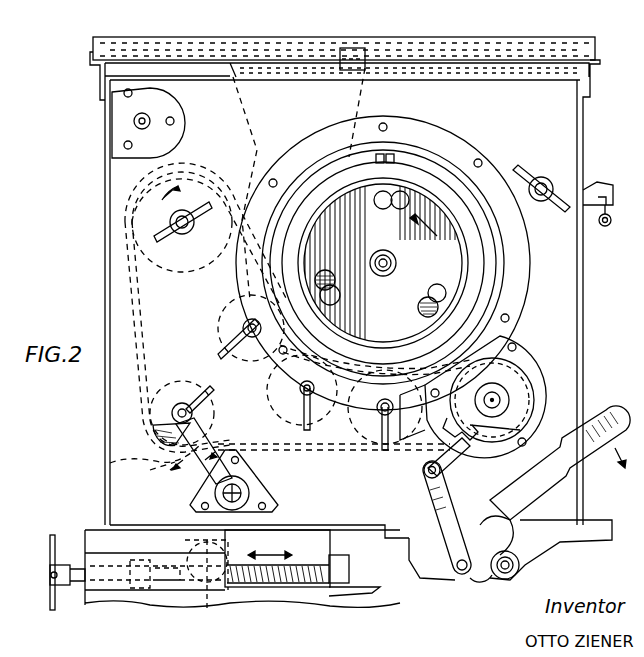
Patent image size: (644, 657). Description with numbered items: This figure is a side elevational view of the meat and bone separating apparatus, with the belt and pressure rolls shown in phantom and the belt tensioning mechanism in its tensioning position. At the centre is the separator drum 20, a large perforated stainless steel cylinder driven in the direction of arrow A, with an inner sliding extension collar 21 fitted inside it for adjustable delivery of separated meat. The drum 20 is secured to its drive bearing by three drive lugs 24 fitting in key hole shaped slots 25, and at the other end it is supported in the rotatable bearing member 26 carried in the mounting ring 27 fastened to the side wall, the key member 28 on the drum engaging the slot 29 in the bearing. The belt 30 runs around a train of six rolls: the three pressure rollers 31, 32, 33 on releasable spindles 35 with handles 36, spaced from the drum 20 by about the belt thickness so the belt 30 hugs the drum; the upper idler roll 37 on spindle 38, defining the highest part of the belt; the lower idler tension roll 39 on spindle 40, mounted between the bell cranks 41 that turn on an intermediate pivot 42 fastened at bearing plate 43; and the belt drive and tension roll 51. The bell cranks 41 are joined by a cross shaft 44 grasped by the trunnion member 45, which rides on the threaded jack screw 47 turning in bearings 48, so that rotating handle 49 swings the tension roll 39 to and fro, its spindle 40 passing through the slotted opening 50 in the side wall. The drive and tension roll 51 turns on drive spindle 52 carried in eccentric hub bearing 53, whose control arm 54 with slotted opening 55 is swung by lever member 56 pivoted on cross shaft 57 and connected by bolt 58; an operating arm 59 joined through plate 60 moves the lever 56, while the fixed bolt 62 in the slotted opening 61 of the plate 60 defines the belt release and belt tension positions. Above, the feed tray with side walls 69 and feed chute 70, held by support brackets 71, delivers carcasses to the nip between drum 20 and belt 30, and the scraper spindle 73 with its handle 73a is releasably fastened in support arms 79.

The separator drum 20 is at (420, 178).
The inner sliding extension collar 21 is at (466, 268).
The drive lugs 24 is at (437, 284).
The key hole shaped slots 25 is at (334, 278).
The rotatable bearing member 26 is at (325, 165).
The mounting ring 27 is at (482, 248).
The key member 28 is at (384, 156).
The slot 29 is at (394, 158).
The belt 30 is at (124, 272).
The pressure roller 31 is at (220, 318).
The pressure roller 32 is at (268, 410).
The pressure roller 33 is at (357, 425).
The releasable spindle 35 is at (285, 345).
The handle 36 is at (243, 336).
The upper idler roll 37 is at (135, 216).
The spindle 38 is at (186, 234).
The lower idler tension roll 39 is at (160, 430).
The spindle 40 is at (175, 412).
The bell cranks 41 is at (110, 464).
The intermediate pivot 42 is at (235, 488).
The bearing plate 43 is at (255, 492).
The cross shaft 44 is at (195, 548).
The trunnion member 45 is at (206, 586).
The threaded jack screw 47 is at (300, 565).
The bearings 48 is at (349, 572).
The handle 49 is at (57, 600).
The slotted opening 50 is at (170, 445).
The belt drive and tension roll 51 is at (525, 375).
The drive spindle 52 is at (503, 400).
The eccentric hub bearing 53 is at (510, 418).
The control arm 54 is at (468, 440).
The slotted opening 55 is at (456, 460).
The lever member 56 is at (438, 498).
The cross shaft 57 is at (458, 568).
The bolt 58 is at (424, 471).
The operating arm 59 is at (585, 478).
The plate 60 is at (483, 578).
The slotted opening 61 is at (525, 560).
The fixed bolt 62 is at (505, 579).
The side walls 69 is at (195, 46).
The feed chute 70 is at (248, 90).
The support brackets 71 is at (600, 58).
The spindle 73 is at (548, 185).
The handle 73a is at (523, 175).
The support arms 79 is at (597, 184).
The arrow A is at (405, 222).